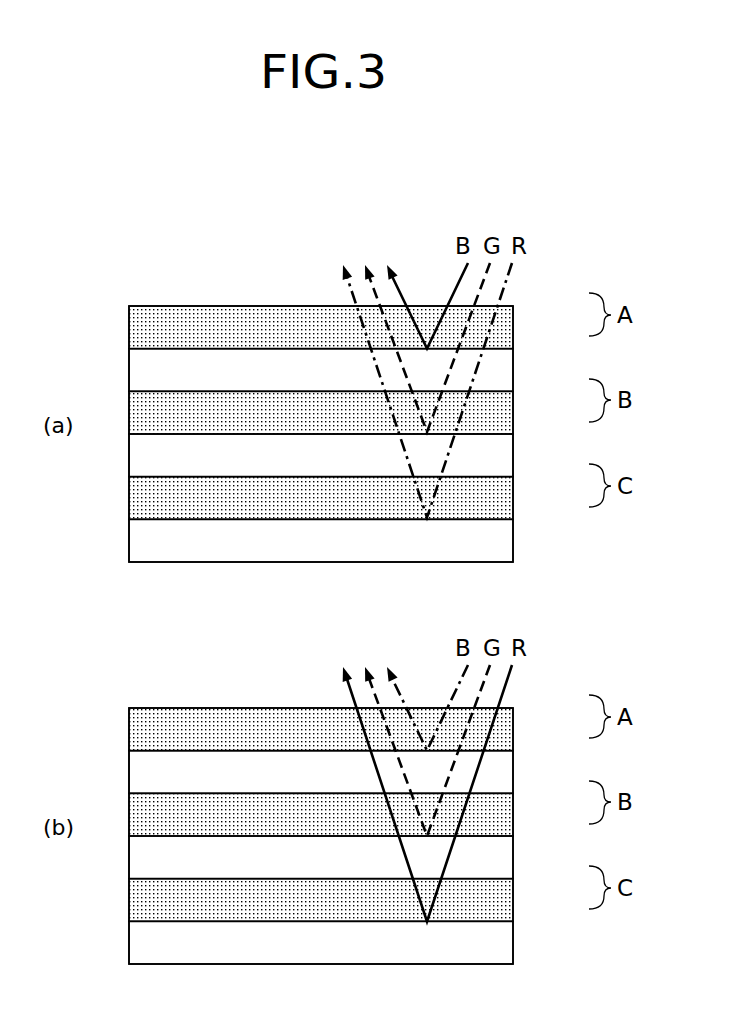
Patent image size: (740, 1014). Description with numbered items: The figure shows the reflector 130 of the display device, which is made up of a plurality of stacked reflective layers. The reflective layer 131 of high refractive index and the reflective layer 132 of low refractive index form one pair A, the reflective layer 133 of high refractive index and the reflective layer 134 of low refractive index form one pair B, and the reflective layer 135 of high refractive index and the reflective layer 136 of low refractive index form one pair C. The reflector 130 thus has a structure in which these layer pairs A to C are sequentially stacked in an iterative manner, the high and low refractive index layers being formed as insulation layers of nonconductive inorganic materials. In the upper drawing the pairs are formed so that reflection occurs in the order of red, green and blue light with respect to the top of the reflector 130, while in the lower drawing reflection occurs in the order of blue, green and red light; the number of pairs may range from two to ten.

The reflector 130 is at (391, 196).
The reflective layer 131 is at (513, 327).
The reflective layer 132 is at (513, 370).
The reflective layer 133 is at (513, 412).
The reflective layer 134 is at (513, 455).
The reflective layer 135 is at (513, 498).
The reflective layer 136 is at (513, 541).